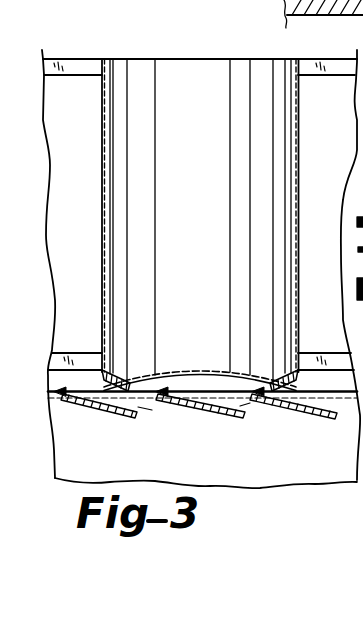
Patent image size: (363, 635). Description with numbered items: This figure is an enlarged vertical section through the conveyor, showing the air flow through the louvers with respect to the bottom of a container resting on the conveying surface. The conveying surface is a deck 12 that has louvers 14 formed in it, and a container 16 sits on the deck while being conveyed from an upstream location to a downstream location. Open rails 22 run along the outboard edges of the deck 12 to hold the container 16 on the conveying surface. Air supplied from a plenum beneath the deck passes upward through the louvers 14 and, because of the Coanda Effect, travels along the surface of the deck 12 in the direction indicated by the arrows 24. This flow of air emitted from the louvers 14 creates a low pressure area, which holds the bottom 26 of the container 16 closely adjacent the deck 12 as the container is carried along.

The deck 12 is at (75, 394).
The louvers 14 is at (204, 403).
The container 16 is at (207, 59).
The open rails 22 is at (110, 27).
The arrows 24 is at (173, 396).
The bottom 26 is at (205, 370).